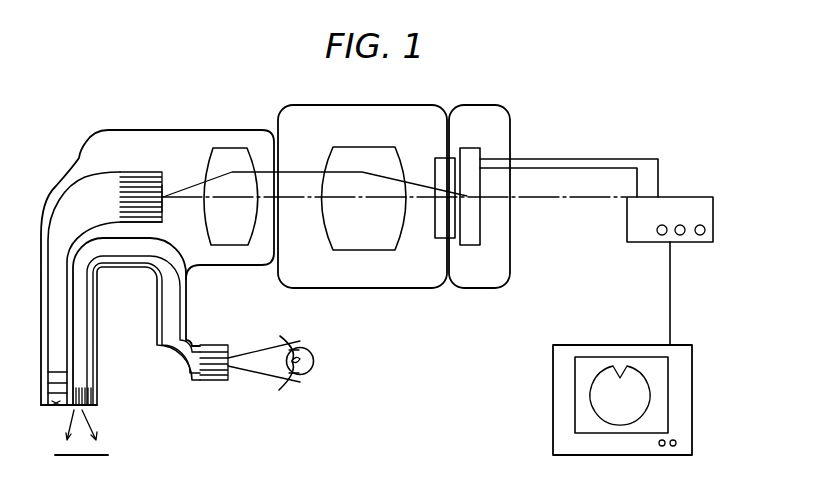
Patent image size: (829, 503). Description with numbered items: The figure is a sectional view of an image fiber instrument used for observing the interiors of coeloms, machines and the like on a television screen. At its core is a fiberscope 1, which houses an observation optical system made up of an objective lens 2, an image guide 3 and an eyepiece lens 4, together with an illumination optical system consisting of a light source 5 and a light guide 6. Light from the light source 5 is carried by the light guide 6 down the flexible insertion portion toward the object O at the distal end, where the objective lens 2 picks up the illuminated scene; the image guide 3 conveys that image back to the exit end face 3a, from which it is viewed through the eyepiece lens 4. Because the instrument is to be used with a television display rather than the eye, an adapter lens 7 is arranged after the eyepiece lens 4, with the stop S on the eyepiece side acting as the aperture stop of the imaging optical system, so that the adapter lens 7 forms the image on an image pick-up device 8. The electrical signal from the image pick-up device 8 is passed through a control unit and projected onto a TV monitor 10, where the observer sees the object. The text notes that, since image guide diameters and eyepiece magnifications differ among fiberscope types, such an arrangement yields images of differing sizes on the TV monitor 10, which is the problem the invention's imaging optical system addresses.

The fiberscope 1 is at (147, 128).
The objective lens 2 is at (46, 400).
The image guide 3 is at (130, 186).
The exit end face of image guide 3a is at (165, 184).
The eyepiece lens 4 is at (230, 158).
The light source 5 is at (311, 350).
The light guide 6 is at (217, 363).
The adapter lens 7 is at (343, 160).
The image pick-up device 8 is at (459, 247).
The stop S is at (279, 236).
The TV monitor 10 is at (568, 353).
The object O is at (97, 456).